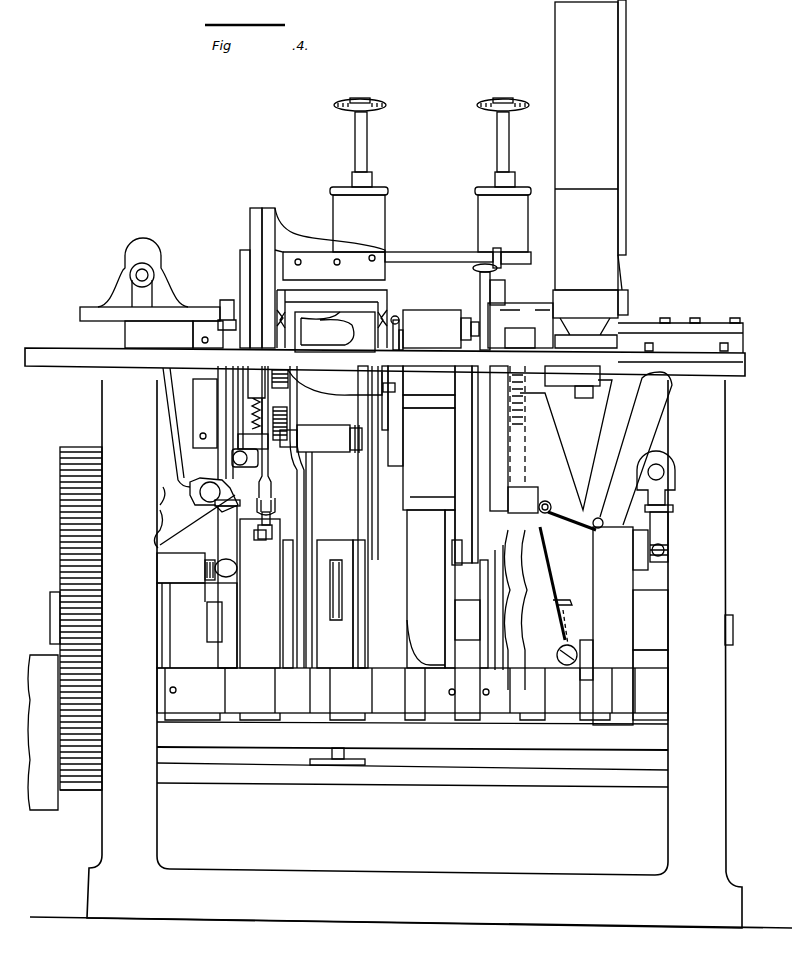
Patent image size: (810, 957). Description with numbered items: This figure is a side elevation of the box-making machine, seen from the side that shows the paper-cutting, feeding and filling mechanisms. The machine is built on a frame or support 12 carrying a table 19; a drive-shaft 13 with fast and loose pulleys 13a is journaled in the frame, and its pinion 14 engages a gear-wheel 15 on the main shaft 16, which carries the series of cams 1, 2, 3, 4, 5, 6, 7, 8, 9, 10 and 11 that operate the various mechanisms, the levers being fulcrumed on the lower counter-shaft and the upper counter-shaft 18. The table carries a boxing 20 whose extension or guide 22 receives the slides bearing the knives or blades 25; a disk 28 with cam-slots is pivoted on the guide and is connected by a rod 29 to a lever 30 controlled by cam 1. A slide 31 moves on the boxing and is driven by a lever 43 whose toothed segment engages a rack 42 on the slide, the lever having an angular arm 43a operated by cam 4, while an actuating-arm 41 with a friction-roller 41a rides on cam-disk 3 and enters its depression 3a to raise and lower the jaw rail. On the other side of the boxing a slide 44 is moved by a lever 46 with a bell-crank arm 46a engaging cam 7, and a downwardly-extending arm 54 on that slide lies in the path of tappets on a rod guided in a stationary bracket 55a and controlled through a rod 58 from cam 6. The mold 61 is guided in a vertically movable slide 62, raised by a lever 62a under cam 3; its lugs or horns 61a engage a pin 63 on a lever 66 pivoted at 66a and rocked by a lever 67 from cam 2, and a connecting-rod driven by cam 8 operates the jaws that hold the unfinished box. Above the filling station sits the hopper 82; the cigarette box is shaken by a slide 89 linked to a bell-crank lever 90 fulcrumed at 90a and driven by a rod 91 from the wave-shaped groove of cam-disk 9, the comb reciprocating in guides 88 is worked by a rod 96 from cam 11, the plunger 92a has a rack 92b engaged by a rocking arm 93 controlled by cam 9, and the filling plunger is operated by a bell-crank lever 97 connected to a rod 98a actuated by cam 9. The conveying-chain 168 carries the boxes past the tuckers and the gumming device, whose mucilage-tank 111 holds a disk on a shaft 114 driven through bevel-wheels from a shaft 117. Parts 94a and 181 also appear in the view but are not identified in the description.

The cam 1 is at (175, 604).
The cam 2 is at (218, 584).
The cam-disk 3 is at (260, 593).
The depression 3a is at (268, 540).
The cam 4 is at (279, 604).
The cam 5 is at (335, 604).
The cam 6 is at (347, 604).
The cam 7 is at (426, 589).
The cam 8 is at (447, 589).
The cam-disk 9 is at (532, 546).
The cam 10 is at (606, 626).
The cam 11 is at (642, 625).
The frame or support 12 is at (128, 820).
The drive-shaft 13 is at (640, 748).
The fast pulley and loose pulley 13a is at (43, 732).
The pinion 14 is at (84, 790).
The gear-wheel 15 is at (70, 537).
The main shaft 16 is at (471, 614).
The upper counter-shaft 18 is at (563, 596).
The table 19 is at (88, 360).
The boxing 20 is at (335, 332).
The extension or guide 22 is at (258, 230).
The knives or blades 25 is at (330, 244).
The disk 28 is at (245, 272).
The rod 29 is at (232, 478).
The lever 30 is at (170, 568).
The slide 31 is at (282, 308).
The actuating-arm 41 is at (300, 468).
The friction-roller 41a is at (272, 520).
The rack 42 is at (308, 488).
The lever 43 is at (355, 508).
The angular arm 43a is at (295, 655).
The slide 44 is at (392, 314).
The lever 46 is at (393, 496).
The bell-crank arm 46a is at (426, 642).
The downwardly-extending arm 54 is at (395, 412).
The stationary bracket 55a is at (419, 380).
The rod 58 is at (362, 460).
The form or mold 61 is at (92, 318).
The lugs or horns 61a is at (168, 296).
The slide 62 is at (250, 410).
The lever 62a is at (214, 455).
The pin 63 is at (148, 266).
The lever 66 is at (180, 324).
The pivot 66a is at (156, 458).
The lever 67 is at (215, 596).
The hopper 82 is at (591, 157).
The guides 88 is at (680, 340).
The slide 89 is at (585, 335).
The bell-crank lever 90 is at (560, 380).
The fulcrum 90a is at (526, 410).
The rod 91 is at (535, 488).
The plunger 92a is at (520, 325).
The rack 92b is at (518, 382).
The rocking arm 93 is at (495, 508).
The bearing 94a is at (592, 520).
The rod 96 is at (660, 545).
The bell-crank lever 97 is at (642, 436).
The rod 98a is at (584, 516).
The mucilage-tank 111 is at (430, 175).
The shaft 114 is at (486, 292).
The shaft 117 is at (415, 256).
The chain 168 is at (441, 329).
The post 181 is at (466, 476).